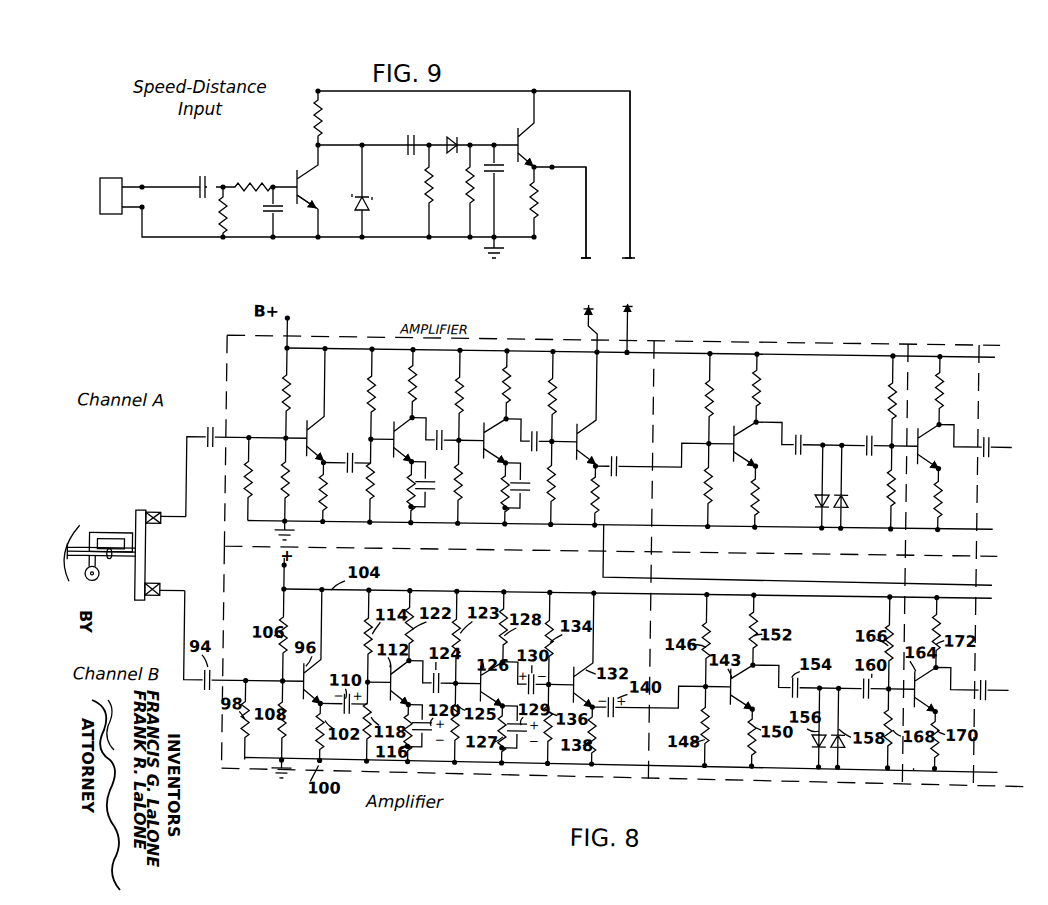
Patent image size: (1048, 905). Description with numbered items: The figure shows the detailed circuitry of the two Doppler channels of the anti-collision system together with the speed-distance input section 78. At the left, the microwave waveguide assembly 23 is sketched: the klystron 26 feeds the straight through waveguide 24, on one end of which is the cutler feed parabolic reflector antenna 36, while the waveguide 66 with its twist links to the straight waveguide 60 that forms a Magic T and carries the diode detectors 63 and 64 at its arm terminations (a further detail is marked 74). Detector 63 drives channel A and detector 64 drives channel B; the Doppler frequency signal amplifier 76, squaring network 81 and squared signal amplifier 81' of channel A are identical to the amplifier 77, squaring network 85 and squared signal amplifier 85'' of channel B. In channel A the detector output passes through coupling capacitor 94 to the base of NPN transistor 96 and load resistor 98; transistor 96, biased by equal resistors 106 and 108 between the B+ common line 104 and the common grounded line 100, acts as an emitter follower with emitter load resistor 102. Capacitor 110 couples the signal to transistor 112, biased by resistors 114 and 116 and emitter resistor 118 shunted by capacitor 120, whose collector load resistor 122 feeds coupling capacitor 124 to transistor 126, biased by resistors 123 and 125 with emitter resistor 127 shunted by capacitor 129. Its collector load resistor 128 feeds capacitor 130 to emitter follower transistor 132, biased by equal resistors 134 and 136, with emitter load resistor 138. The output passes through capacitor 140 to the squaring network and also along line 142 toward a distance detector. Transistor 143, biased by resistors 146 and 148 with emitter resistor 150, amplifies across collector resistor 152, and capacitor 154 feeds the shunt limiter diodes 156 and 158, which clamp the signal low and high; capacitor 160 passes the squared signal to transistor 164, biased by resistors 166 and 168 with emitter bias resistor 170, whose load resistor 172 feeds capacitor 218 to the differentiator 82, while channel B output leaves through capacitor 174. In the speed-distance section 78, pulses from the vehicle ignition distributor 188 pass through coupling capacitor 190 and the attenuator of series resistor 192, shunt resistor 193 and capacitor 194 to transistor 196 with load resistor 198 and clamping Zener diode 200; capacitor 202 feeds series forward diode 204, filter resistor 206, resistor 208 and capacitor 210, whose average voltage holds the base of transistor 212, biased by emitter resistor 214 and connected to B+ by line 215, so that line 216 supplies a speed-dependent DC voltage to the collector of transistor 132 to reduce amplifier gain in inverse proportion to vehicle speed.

In FIG. 9, the speed-distance input section 78 is at (268, 135).
In FIG. 9, the vehicle ignition distributor 188 is at (112, 214).
In FIG. 9, the coupling capacitor 190 is at (198, 182).
In FIG. 9, the series resistor 192 is at (246, 184).
In FIG. 9, the shunt resistor 193 is at (216, 218).
In FIG. 9, the capacitor 194 is at (264, 220).
In FIG. 9, the NPN transistor 196 is at (290, 176).
In FIG. 9, the load resistor 198 is at (314, 120).
In FIG. 9, the Zener diode 200 is at (360, 206).
In FIG. 9, the capacitor 202 is at (408, 138).
In FIG. 9, the series forward diode 204 is at (454, 137).
In FIG. 9, the filter resistor 206 is at (426, 195).
In FIG. 9, the resistor 208 is at (468, 195).
In FIG. 9, the capacitor 210 is at (496, 178).
In FIG. 9, the NPN transistor 212 is at (520, 140).
In FIG. 9, the resistor 214 is at (536, 202).
In FIG. 9, the line 215 is at (632, 247).
In FIG. 8, the line 215 is at (632, 322).
In FIG. 9, the line 216 is at (587, 208).
In FIG. 8, the line 216 is at (588, 324).
In FIG. 8, the cutler feed parabolic reflector antenna 36 is at (72, 534).
In FIG. 8, the klystron 26 is at (92, 584).
In FIG. 8, the waveguide 66 is at (96, 537).
In FIG. 8, the straight through waveguide 24 is at (128, 562).
In FIG. 8, the pivot pin 74 is at (116, 564).
In FIG. 8, the waveguide assembly 23 is at (120, 532).
In FIG. 8, the straight waveguide 60 is at (158, 555).
In FIG. 8, the diode detector 63 is at (154, 514).
In FIG. 8, the diode detector 64 is at (156, 598).
In FIG. 8, the Doppler frequency signal amplifier 76 is at (224, 365).
In FIG. 8, the Doppler frequency signal amplifier 77 is at (224, 752).
In FIG. 8, the squaring network 81 is at (725, 544).
In FIG. 8, the squared signal amplifier 81' is at (864, 550).
In FIG. 8, the differentiator 82 is at (992, 334).
In FIG. 8, the squaring network 85 is at (772, 795).
In FIG. 8, the squared signal amplifier 85'' is at (898, 806).
In FIG. 8, the B+ common line 104 is at (331, 347).
In FIG. 8, the common grounded line 100 is at (530, 527).
In FIG. 8, the line 142 is at (676, 576).
In FIG. 8, the coupling capacitor 94 is at (210, 427).
In FIG. 8, the resistor 106 is at (286, 383).
In FIG. 8, the load resistor 98 is at (254, 477).
In FIG. 8, the resistor 108 is at (282, 488).
In FIG. 8, the NPN transistor 96 is at (316, 440).
In FIG. 8, the capacitor 110 is at (350, 456).
In FIG. 8, the load resistor 102 is at (330, 486).
In FIG. 8, the resistor 114 is at (376, 385).
In FIG. 8, the NPN transistor 112 is at (394, 421).
In FIG. 8, the resistor 118 is at (376, 466).
In FIG. 8, the resistor 116 is at (412, 498).
In FIG. 8, the collector load resistor 122 is at (416, 388).
In FIG. 8, the coupling capacitor 124 is at (440, 426).
In FIG. 8, the capacitor 120 is at (436, 477).
In FIG. 8, the resistor 123 is at (464, 387).
In FIG. 8, the NPN transistor 126 is at (486, 424).
In FIG. 8, the resistor 125 is at (462, 464).
In FIG. 8, the resistor 127 is at (508, 496).
In FIG. 8, the collector load resistor 128 is at (510, 389).
In FIG. 8, the capacitor 130 is at (536, 424).
In FIG. 8, the capacitor 129 is at (526, 482).
In FIG. 8, the resistor 134 is at (554, 408).
In FIG. 8, the NPN transistor 132 is at (590, 429).
In FIG. 8, the resistor 136 is at (556, 479).
In FIG. 8, the emitter load resistor 138 is at (596, 502).
In FIG. 8, the capacitor 140 is at (620, 452).
In FIG. 8, the resistor 146 is at (710, 396).
In FIG. 8, the resistor 148 is at (710, 498).
In FIG. 8, the NPN transistor 143 is at (740, 433).
In FIG. 8, the collector resistor 152 is at (759, 393).
In FIG. 8, the resistor 150 is at (758, 492).
In FIG. 8, the capacitor 154 is at (804, 428).
In FIG. 8, the capacitor 160 is at (876, 428).
In FIG. 8, the diode 156 is at (824, 490).
In FIG. 8, the diode 158 is at (844, 506).
In FIG. 8, the resistor 166 is at (892, 398).
In FIG. 8, the resistor 168 is at (900, 486).
In FIG. 8, the transistor 164 is at (920, 431).
In FIG. 8, the load resistor 172 is at (942, 392).
In FIG. 8, the emitter bias resistor 170 is at (944, 483).
In FIG. 8, the capacitor 218 is at (990, 439).
In FIG. 8, the capacitor 174 is at (992, 676).